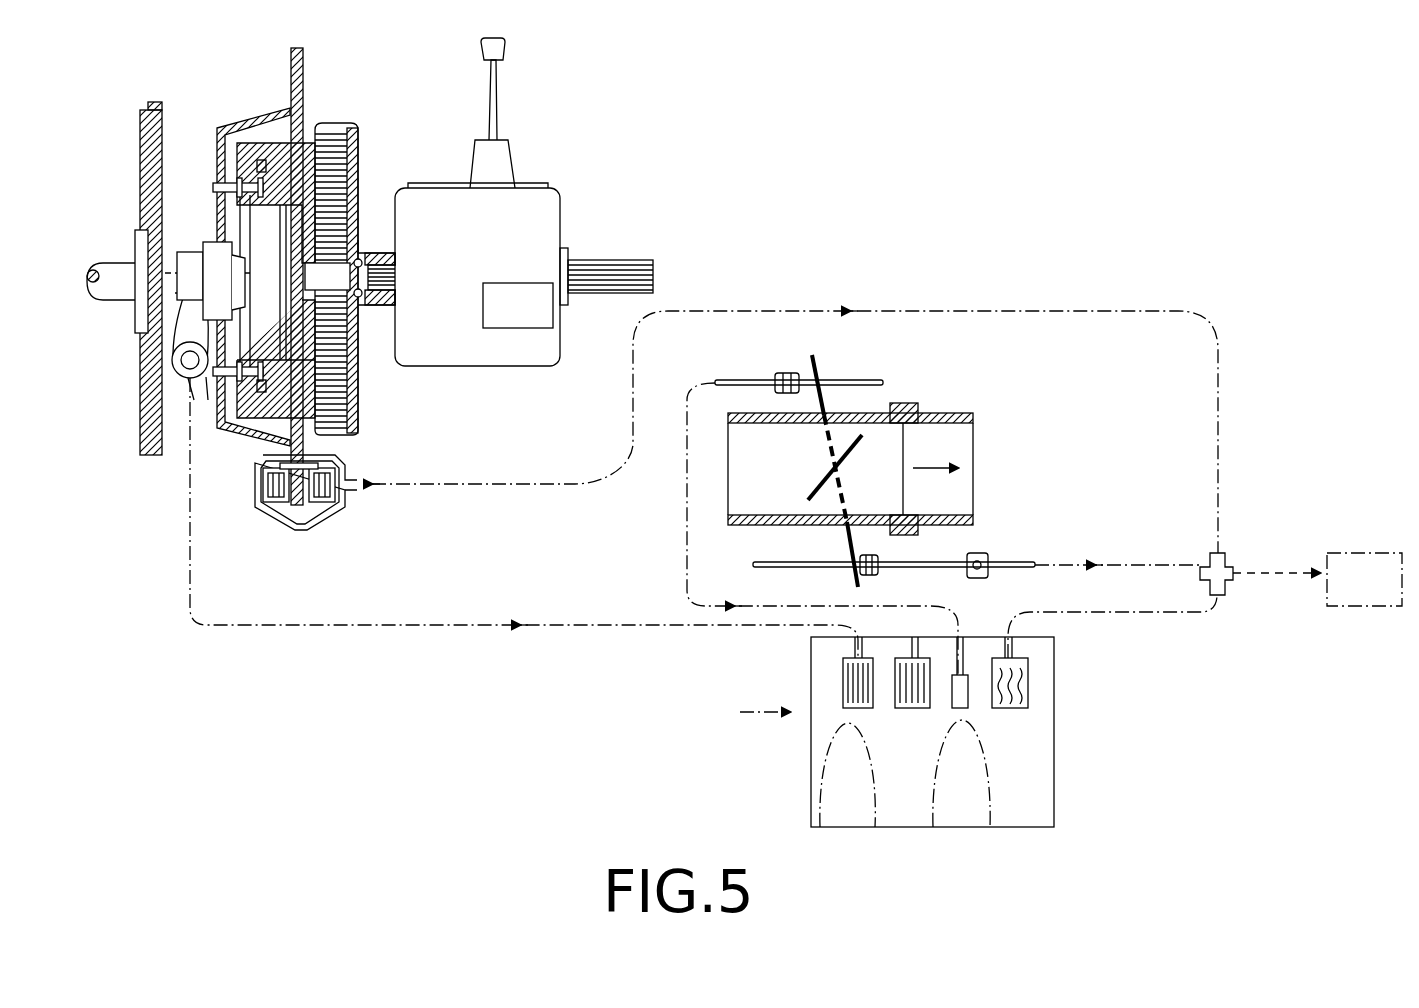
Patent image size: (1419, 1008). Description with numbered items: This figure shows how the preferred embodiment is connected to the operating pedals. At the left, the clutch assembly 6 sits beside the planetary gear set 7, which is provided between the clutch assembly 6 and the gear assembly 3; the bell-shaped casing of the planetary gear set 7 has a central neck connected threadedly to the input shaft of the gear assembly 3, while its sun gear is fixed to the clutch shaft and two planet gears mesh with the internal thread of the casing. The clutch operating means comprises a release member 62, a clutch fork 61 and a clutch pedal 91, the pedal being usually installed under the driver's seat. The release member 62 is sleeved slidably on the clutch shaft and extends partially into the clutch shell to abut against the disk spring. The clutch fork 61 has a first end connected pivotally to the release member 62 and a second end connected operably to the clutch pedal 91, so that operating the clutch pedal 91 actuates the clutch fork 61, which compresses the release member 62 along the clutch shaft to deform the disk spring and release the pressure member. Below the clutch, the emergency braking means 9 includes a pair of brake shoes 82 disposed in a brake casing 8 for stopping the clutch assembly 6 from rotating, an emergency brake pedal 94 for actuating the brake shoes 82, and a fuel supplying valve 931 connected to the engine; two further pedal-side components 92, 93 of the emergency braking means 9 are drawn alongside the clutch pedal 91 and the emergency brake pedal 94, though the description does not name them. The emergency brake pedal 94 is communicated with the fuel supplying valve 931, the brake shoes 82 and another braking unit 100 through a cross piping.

The gear assembly 3 is at (575, 212).
The clutch assembly 6 is at (272, 110).
The planetary gear set 7 is at (356, 120).
The brake casing 8 is at (303, 525).
The emergency braking means 9 is at (920, 732).
The clutch fork 61 is at (192, 378).
The release member 62 is at (215, 250).
The brake shoes 82 is at (270, 484).
The clutch pedal 91 is at (846, 672).
The second sensor 92 is at (900, 705).
The third sensor 93 is at (962, 700).
The emergency brake pedal 94 is at (1022, 683).
The braking unit 100 is at (1378, 608).
The fuel supplying valve 931 is at (843, 432).